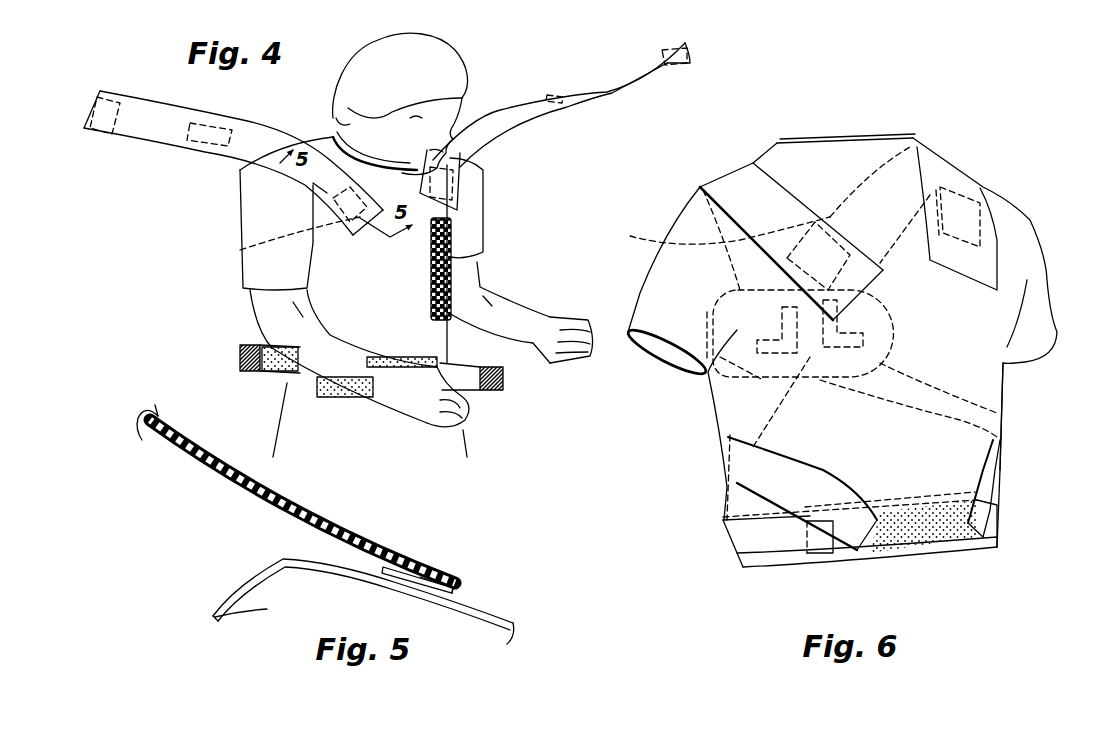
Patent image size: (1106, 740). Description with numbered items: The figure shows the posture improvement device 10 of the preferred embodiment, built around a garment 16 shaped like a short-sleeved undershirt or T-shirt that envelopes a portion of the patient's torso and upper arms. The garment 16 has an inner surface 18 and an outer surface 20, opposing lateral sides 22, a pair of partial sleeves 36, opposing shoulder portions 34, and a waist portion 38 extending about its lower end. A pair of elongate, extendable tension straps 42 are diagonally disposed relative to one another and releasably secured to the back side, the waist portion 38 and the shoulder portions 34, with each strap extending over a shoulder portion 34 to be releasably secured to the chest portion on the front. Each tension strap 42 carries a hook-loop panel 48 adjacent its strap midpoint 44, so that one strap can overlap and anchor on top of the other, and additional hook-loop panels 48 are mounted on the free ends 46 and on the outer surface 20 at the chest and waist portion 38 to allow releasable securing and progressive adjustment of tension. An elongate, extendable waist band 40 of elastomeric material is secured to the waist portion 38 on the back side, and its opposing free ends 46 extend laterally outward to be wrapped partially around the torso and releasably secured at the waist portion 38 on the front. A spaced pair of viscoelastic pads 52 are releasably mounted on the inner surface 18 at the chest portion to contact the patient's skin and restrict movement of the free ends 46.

In FIG. 4, the posture improvement device 10 is at (557, 166).
In FIG. 6, the posture improvement device 10 is at (967, 120).
In FIG. 4, the garment 16 is at (458, 250).
In FIG. 5, the garment 16 is at (458, 608).
In FIG. 6, the garment 16 is at (835, 140).
In FIG. 6, the inner surface 18 is at (645, 347).
In FIG. 6, the outer surface 20 is at (653, 303).
In FIG. 6, the opposing lateral sides 22 is at (727, 457).
In FIG. 5, the shoulder portions 34 is at (237, 588).
In FIG. 6, the shoulder portions 34 is at (757, 160).
In FIG. 4, the partial sleeves 36 is at (242, 205).
In FIG. 6, the partial sleeves 36 is at (1053, 312).
In FIG. 6, the waist portion 38 is at (913, 563).
In FIG. 4, the waist band 40 is at (460, 403).
In FIG. 6, the waist band 40 is at (743, 542).
In FIG. 4, the tension straps 42 is at (140, 100).
In FIG. 5, the tension straps 42 is at (393, 566).
In FIG. 6, the tension straps 42 is at (700, 187).
In FIG. 4, the strap midpoint 44 is at (527, 100).
In FIG. 4, the free ends 46 is at (93, 96).
In FIG. 5, the free ends 46 is at (453, 586).
In FIG. 6, the free ends 46 is at (823, 553).
In FIG. 4, the hook-loop panel 48 is at (103, 131).
In FIG. 5, the hook-loop panel 48 is at (428, 578).
In FIG. 6, the hook-loop panel 48 is at (962, 587).
In FIG. 6, the viscoelastic pads 52 is at (735, 403).